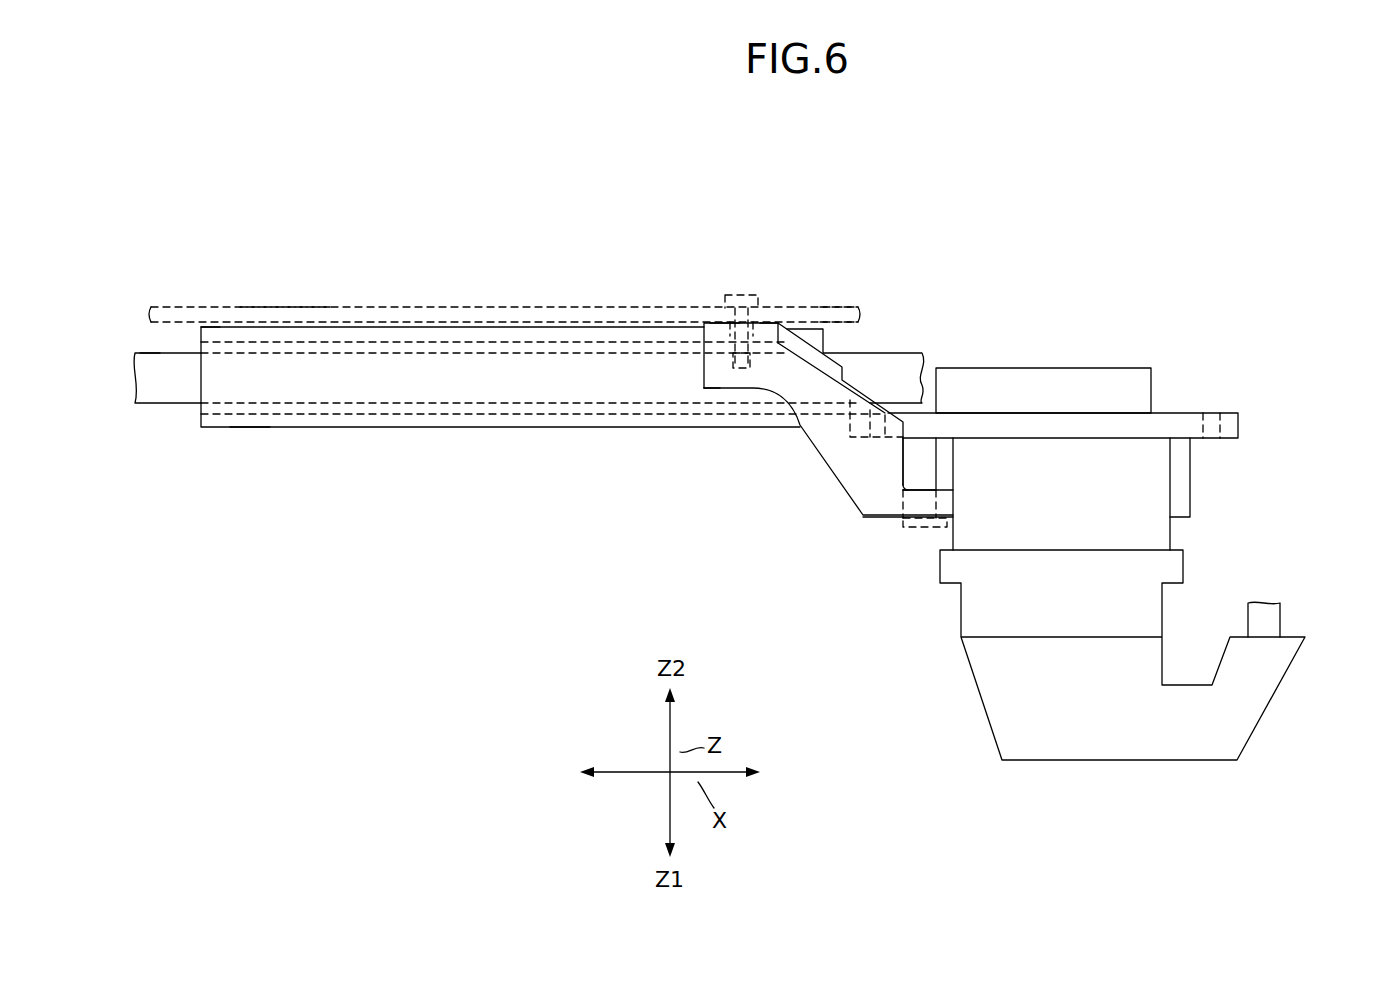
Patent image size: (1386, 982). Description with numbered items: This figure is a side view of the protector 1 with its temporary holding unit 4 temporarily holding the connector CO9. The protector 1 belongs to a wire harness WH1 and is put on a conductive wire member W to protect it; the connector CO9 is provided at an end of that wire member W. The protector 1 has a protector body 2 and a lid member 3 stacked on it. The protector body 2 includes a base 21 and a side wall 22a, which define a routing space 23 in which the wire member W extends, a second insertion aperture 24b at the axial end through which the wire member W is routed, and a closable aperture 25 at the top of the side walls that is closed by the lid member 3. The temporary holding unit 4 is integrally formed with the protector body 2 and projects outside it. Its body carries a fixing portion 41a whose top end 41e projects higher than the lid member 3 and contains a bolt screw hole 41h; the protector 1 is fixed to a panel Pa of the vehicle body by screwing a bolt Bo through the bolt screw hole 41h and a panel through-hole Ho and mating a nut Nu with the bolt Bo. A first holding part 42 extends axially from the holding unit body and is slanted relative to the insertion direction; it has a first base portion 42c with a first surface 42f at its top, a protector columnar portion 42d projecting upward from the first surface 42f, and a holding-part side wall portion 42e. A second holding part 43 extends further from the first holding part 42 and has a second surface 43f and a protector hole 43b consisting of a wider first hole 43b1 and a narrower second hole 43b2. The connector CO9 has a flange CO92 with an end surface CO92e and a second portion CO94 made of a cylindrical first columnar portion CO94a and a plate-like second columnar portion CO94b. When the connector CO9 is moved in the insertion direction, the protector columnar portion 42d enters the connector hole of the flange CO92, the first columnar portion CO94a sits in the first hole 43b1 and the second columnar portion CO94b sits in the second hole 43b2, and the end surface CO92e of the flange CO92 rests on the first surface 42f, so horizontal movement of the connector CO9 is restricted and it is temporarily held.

The protector 1 is at (180, 460).
The protector body 2 is at (250, 460).
The lid member 3 is at (380, 322).
The temporary holding unit 4 is at (690, 501).
The base 21 is at (365, 428).
The side wall 22a is at (317, 385).
The routing space 23 is at (338, 373).
The second insertion aperture 24b is at (838, 340).
The closable aperture 25 is at (315, 342).
The fixing portion 41a is at (700, 334).
The end of fixing portion in height direction 41e is at (718, 320).
The bolt screw hole 41h is at (787, 323).
The first holding part 42 is at (890, 380).
The first base portion 42c is at (878, 443).
The protector columnar portion 42d is at (855, 435).
The holding-part side wall portion 42e is at (860, 415).
The first surface 42f is at (850, 445).
The second holding part 43 is at (947, 322).
The protector hole 43b is at (938, 663).
The first hole 43b1 is at (857, 432).
The second hole 43b2 is at (943, 530).
The second surface 43f is at (903, 487).
The bolt Bo is at (745, 296).
The panel through-hole Ho is at (755, 303).
The nut Nu is at (697, 350).
The panel Pa is at (278, 307).
The wire member W is at (153, 403).
The wire harness WH1 is at (203, 266).
The connector CO9 is at (1162, 322).
The flange CO92 is at (1238, 414).
The end surface of flange CO92e is at (1228, 440).
The second portion (connector columnar portion) CO94 is at (1290, 465).
The first columnar portion CO94a is at (920, 467).
The second columnar portion CO94b is at (943, 502).